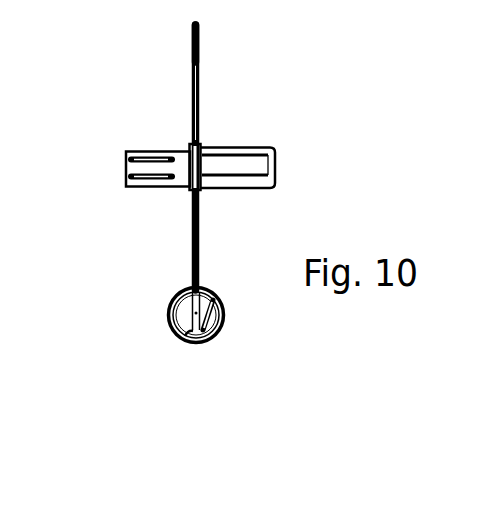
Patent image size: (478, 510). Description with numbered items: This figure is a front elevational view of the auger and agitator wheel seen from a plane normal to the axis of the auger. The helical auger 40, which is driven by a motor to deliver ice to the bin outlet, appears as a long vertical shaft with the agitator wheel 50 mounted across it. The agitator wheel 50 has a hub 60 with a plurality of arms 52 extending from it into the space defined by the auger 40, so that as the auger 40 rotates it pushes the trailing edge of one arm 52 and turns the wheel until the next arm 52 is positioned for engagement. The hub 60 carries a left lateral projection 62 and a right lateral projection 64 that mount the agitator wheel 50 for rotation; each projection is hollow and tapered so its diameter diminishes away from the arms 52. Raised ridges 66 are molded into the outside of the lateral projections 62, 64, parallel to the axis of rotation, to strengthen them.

The helical auger 40 is at (173, 302).
The agitator wheel 50 is at (201, 80).
The arms 52 is at (191, 59).
The hub 60 is at (275, 148).
The left lateral projection 62 is at (172, 171).
The right lateral projection 64 is at (217, 182).
The raised ridges 66 is at (127, 172).